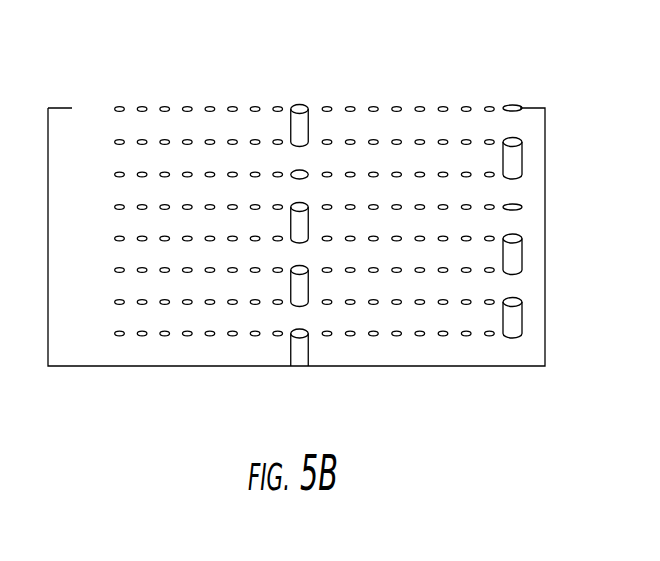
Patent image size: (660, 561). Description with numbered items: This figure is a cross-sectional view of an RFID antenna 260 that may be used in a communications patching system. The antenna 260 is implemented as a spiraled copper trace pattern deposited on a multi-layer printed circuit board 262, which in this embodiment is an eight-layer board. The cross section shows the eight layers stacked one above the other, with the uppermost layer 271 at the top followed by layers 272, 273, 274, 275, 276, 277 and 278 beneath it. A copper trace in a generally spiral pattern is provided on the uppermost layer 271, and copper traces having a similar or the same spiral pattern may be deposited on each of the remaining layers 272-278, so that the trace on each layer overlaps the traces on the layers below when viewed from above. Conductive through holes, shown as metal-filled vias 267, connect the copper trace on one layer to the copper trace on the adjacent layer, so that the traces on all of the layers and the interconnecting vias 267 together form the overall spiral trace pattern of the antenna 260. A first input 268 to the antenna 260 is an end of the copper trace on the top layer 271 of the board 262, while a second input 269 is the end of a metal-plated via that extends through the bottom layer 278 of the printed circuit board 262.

The RFID antenna 260 is at (343, 233).
The multi-layer printed circuit board 262 is at (545, 261).
The metal-filled via 267 is at (308, 127).
The first input 268 is at (513, 105).
The second input 269 is at (291, 350).
The uppermost layer 271 is at (284, 109).
The layer 272 is at (284, 142).
The layer 273 is at (284, 175).
The layer 274 is at (298, 207).
The layer 275 is at (284, 239).
The layer 276 is at (284, 270).
The layer 277 is at (284, 302).
The layer 278 is at (284, 334).